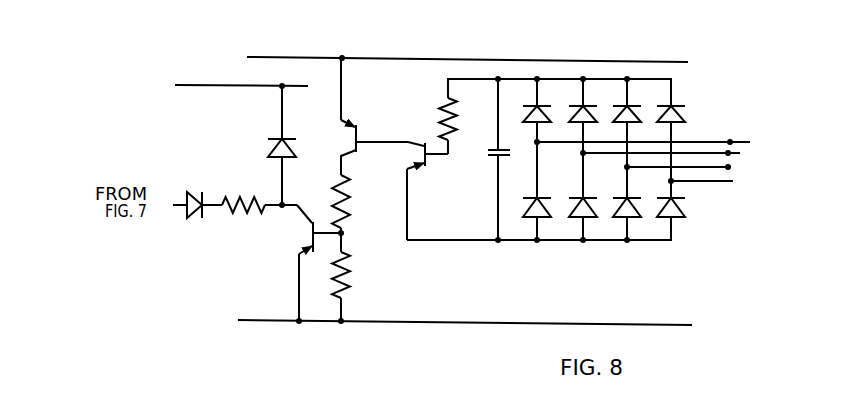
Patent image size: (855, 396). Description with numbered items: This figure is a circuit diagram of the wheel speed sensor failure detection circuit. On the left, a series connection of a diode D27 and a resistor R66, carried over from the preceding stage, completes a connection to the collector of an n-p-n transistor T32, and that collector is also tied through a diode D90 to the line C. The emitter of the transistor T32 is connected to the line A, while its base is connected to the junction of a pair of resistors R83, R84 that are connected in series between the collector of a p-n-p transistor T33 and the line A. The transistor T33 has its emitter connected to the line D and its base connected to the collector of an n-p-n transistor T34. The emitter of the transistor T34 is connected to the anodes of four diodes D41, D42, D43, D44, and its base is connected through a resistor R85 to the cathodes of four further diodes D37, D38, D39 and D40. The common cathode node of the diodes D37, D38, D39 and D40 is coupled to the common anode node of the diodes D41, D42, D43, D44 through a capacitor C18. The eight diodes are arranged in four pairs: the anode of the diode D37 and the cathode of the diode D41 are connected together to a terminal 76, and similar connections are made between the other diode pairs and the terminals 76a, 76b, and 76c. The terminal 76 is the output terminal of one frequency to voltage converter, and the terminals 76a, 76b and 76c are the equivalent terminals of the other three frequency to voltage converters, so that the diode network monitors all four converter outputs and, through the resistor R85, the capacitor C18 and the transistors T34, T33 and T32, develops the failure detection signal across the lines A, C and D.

The line C is at (203, 82).
The line D is at (363, 55).
The line A is at (513, 323).
The diode D27 is at (192, 218).
The resistor R66 is at (247, 217).
The diode D90 is at (268, 148).
The n-p-n transistor T32 is at (303, 233).
The p-n-p transistor T33 is at (345, 138).
The n-p-n transistor T34 is at (412, 155).
The resistor R83 is at (352, 200).
The resistor R84 is at (347, 283).
The resistor R85 is at (440, 98).
The capacitor C18 is at (492, 158).
The diode D37 is at (538, 107).
The diode D38 is at (583, 107).
The diode D39 is at (627, 108).
The diode D40 is at (683, 115).
The diode D41 is at (537, 208).
The diode D42 is at (580, 208).
The diode D43 is at (627, 208).
The diode D44 is at (672, 208).
The terminal 76 is at (655, 147).
The terminal 76a is at (732, 156).
The terminal 76b is at (732, 170).
The terminal 76c is at (733, 181).